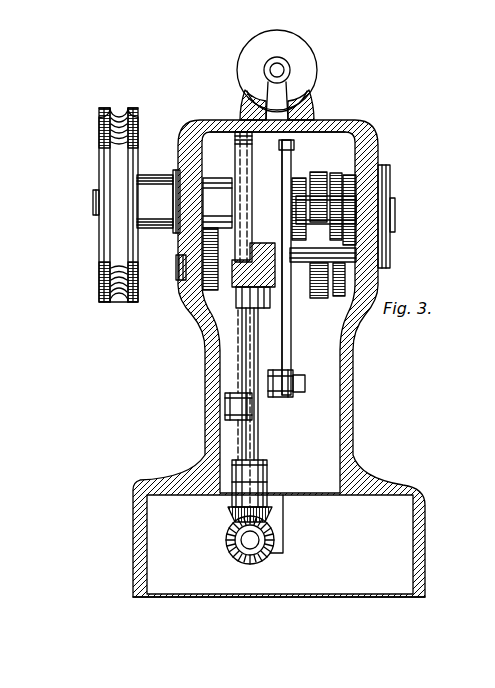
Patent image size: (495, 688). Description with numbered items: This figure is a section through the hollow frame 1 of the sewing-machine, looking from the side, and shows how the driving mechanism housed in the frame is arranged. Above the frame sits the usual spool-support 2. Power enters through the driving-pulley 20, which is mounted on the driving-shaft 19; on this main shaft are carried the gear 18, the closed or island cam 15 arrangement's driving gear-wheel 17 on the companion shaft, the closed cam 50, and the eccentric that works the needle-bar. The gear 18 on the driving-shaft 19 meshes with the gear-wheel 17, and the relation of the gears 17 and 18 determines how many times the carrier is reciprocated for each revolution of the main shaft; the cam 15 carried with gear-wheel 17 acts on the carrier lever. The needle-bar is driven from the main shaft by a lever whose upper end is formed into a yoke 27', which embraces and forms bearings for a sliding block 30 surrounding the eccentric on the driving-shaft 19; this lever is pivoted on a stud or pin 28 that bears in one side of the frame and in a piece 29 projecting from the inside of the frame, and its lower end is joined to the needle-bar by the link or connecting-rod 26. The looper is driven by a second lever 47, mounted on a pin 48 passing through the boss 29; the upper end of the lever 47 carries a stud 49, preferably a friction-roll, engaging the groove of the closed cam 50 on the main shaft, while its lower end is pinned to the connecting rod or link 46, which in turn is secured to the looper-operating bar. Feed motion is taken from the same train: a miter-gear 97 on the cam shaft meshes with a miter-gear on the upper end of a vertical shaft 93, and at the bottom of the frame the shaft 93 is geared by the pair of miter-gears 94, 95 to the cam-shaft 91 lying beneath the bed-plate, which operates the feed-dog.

The frame 1 is at (346, 398).
The spool-support 2 is at (279, 97).
The closed or island cam 15 is at (320, 293).
The gear-wheel 17 is at (345, 290).
The gear 18 is at (350, 172).
The driving-shaft 19 is at (97, 203).
The driving-pulley 20 is at (100, 166).
The link or connecting-rod 26 is at (277, 398).
The yoke 27' is at (335, 249).
The stud or pin 28 is at (384, 240).
The piece or boss 29 is at (228, 284).
The sliding block 30 is at (293, 177).
The connecting rod or link 46 is at (229, 421).
The lever 47 is at (240, 352).
The pin 48 is at (176, 273).
The stud 49 is at (243, 183).
The closed cam 50 is at (237, 147).
The cam-shaft 91 is at (227, 545).
The vertical shaft 93 is at (259, 446).
The miter-gear 94 is at (252, 540).
The miter-gear 95 is at (230, 512).
The miter-gear 97 is at (180, 258).